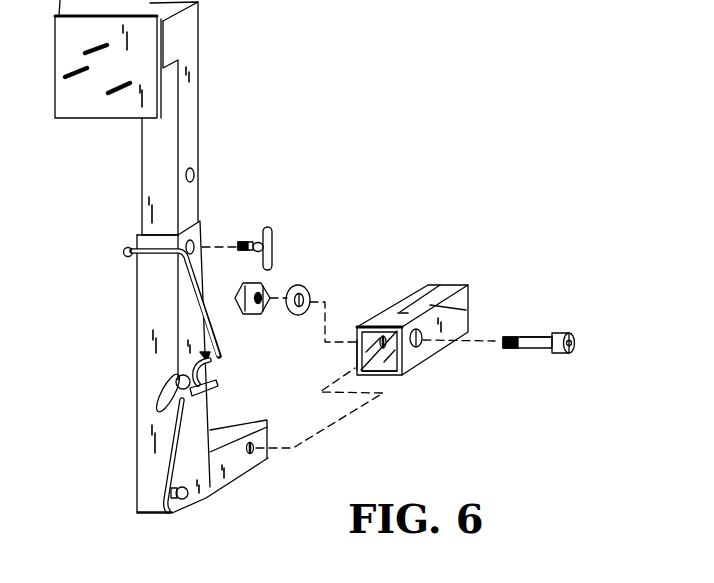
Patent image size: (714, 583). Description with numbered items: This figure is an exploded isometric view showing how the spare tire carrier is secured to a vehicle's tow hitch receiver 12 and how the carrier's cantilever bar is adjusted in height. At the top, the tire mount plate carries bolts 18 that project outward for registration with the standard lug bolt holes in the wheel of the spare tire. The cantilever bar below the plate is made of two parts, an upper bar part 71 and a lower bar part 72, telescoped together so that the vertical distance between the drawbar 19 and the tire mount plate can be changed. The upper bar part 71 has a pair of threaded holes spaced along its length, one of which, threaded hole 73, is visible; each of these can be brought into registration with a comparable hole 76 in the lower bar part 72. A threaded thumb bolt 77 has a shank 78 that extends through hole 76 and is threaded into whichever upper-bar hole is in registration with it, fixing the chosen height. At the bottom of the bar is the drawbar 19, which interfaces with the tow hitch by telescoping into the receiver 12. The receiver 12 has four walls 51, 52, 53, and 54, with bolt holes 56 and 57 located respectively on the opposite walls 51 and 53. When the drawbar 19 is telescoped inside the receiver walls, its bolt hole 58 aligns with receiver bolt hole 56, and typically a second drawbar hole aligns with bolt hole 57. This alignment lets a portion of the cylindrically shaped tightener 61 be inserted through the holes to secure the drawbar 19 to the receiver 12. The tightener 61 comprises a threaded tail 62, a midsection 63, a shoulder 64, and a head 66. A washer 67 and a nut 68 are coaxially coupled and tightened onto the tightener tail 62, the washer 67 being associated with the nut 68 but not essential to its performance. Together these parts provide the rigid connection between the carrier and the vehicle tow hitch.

The tow hitch receiver 12 is at (402, 258).
The bolts 18 is at (92, 52).
The drawbar 19 is at (195, 526).
The wall 51 is at (463, 303).
The wall 52 is at (433, 292).
The wall 53 is at (356, 363).
The wall 54 is at (403, 375).
The bolt hole 56 is at (420, 343).
The bolt hole 57 is at (380, 342).
The bolt hole 58 is at (252, 452).
The tightener 61 is at (587, 331).
The threaded tail 62 is at (517, 355).
The midsection 63 is at (535, 334).
The shoulder 64 is at (552, 355).
The head 66 is at (576, 336).
The washer 67 is at (300, 286).
The nut 68 is at (248, 317).
The upper bar part 71 is at (192, 38).
The lower bar part 72 is at (143, 323).
The threaded hole 73 is at (193, 172).
The hole 76 is at (195, 243).
The threaded thumb bolt 77 is at (268, 227).
The shank 78 is at (242, 238).